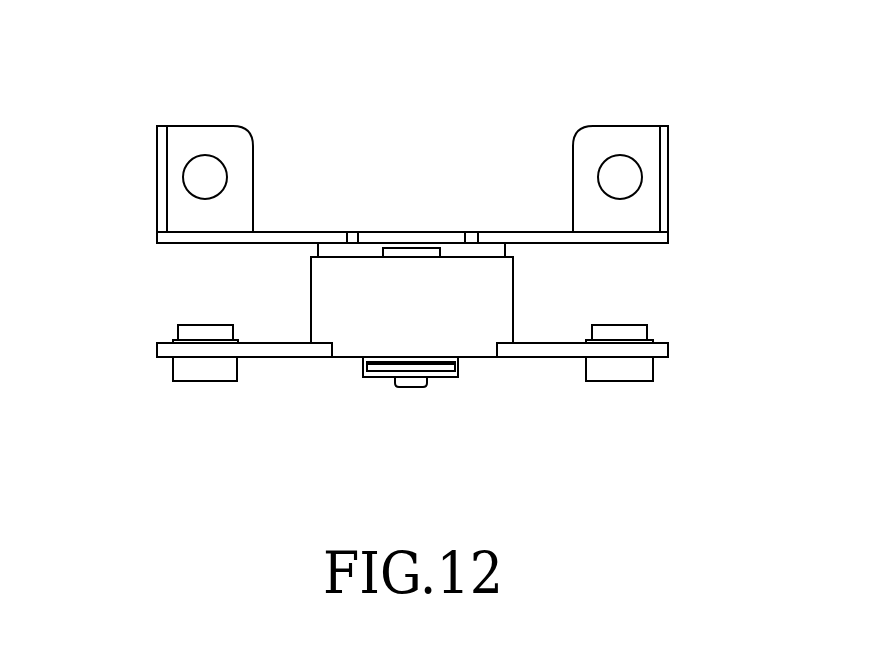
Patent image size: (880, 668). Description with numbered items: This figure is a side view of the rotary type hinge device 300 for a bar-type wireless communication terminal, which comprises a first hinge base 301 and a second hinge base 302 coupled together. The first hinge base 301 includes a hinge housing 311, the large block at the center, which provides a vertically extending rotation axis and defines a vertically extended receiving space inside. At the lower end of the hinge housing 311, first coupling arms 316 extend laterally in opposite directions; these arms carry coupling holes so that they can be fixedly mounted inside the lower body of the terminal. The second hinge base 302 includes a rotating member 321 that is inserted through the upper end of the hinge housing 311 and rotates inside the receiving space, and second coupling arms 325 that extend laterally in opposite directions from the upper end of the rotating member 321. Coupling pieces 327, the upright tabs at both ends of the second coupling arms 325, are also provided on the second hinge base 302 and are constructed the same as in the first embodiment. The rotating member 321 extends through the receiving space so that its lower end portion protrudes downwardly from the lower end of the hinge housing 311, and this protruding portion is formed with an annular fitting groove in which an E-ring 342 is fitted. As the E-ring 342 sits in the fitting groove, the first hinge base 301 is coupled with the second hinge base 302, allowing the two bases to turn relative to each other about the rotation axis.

The rotary type hinge device 300 is at (730, 31).
The coupling pieces 327 is at (159, 157).
The second coupling arms 325 is at (291, 236).
The second hinge base 302 is at (408, 216).
The hinge housing 311 is at (502, 295).
The first coupling arms 316 is at (268, 350).
The first hinge base 301 is at (323, 381).
The E-ring 342 is at (377, 371).
The rotating member 321 is at (410, 388).